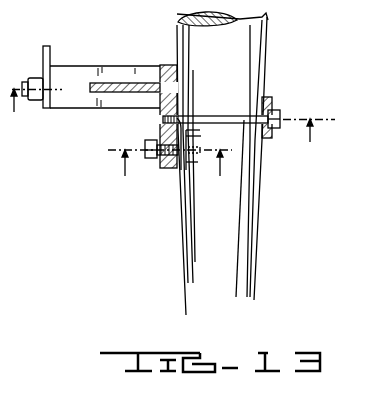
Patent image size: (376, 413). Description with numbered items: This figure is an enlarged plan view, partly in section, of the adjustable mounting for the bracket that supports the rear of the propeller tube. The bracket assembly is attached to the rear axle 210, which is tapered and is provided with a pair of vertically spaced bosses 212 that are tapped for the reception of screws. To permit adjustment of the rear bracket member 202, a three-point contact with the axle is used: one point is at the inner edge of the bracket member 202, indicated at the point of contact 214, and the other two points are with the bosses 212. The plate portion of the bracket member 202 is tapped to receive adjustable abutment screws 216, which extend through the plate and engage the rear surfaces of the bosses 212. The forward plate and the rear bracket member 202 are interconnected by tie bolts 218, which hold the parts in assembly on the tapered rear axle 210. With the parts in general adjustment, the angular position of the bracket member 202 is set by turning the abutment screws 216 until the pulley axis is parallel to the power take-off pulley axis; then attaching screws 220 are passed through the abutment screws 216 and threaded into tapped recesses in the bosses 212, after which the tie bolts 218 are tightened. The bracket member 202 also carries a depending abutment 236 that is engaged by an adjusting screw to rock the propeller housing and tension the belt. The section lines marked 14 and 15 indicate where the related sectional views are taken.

The rear axle 210 is at (254, 256).
The point of contact 214 is at (181, 68).
The adjustable abutment screws 216 is at (173, 166).
The tie bolts 218 is at (219, 117).
The depending abutment 236 is at (51, 45).
The rear bracket member 202 is at (93, 83).
The bosses 212 is at (186, 168).
The attaching screws 220 is at (148, 141).
The section line 14 is at (164, 174).
The section line 15 is at (165, 125).